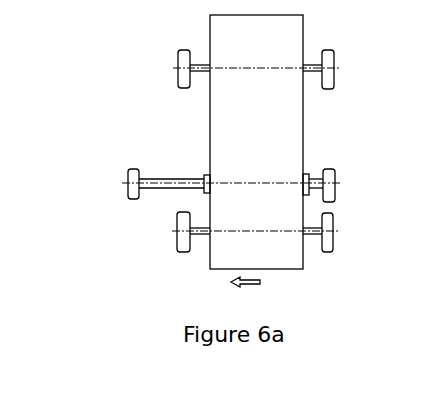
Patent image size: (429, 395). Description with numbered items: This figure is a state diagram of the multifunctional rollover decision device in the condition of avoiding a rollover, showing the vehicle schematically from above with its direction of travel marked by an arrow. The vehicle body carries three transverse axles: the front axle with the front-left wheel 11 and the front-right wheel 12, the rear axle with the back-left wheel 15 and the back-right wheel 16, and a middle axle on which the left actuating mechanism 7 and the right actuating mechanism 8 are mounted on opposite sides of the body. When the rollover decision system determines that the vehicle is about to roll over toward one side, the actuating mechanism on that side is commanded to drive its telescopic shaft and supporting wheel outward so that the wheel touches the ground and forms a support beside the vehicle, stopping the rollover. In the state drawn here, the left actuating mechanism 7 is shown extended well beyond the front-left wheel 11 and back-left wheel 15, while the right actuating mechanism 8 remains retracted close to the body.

The left actuating mechanism 7 is at (133, 170).
The right actuating mechanism 8 is at (330, 193).
The front-left wheel 11 is at (182, 63).
The front-right wheel 12 is at (330, 82).
The back-left wheel 15 is at (183, 249).
The back-right wheel 16 is at (330, 243).